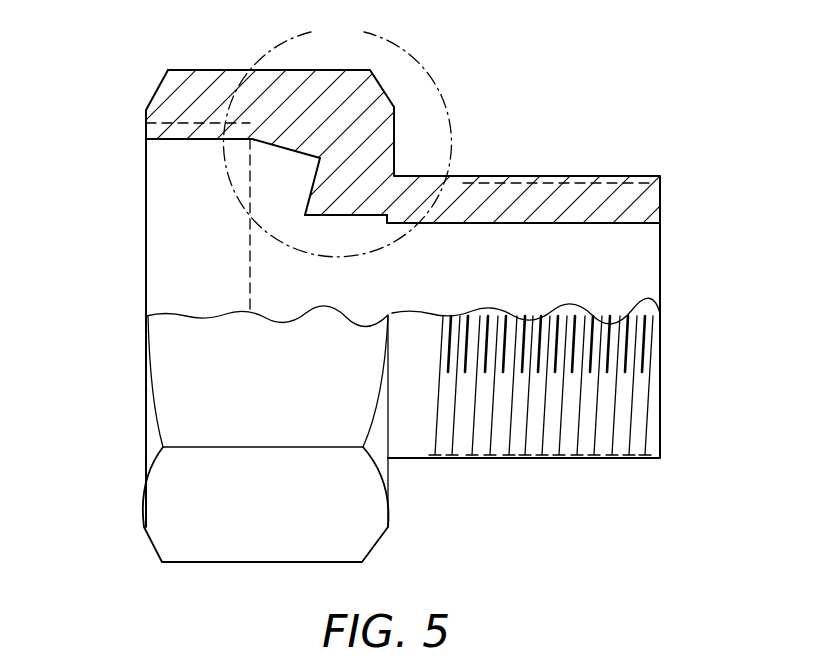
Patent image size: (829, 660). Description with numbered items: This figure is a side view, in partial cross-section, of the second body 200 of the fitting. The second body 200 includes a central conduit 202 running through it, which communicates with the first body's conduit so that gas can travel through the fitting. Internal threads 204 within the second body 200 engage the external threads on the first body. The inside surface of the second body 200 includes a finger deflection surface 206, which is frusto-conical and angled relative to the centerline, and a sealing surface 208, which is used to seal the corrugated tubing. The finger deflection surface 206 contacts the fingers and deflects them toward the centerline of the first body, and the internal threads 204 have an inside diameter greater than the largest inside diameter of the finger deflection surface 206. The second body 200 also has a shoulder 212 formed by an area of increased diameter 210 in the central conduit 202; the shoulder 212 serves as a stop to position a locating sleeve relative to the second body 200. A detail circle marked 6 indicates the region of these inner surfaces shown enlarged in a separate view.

The second body 200 is at (138, 70).
The central conduit 202 is at (647, 253).
The internal threads 204 is at (193, 125).
The finger deflection surface 206 is at (272, 143).
The sealing surface 208 is at (310, 196).
The area of increased diameter 210 is at (373, 233).
The shoulder 212 is at (392, 224).
The detail circle for FIG. 6 is at (338, 135).